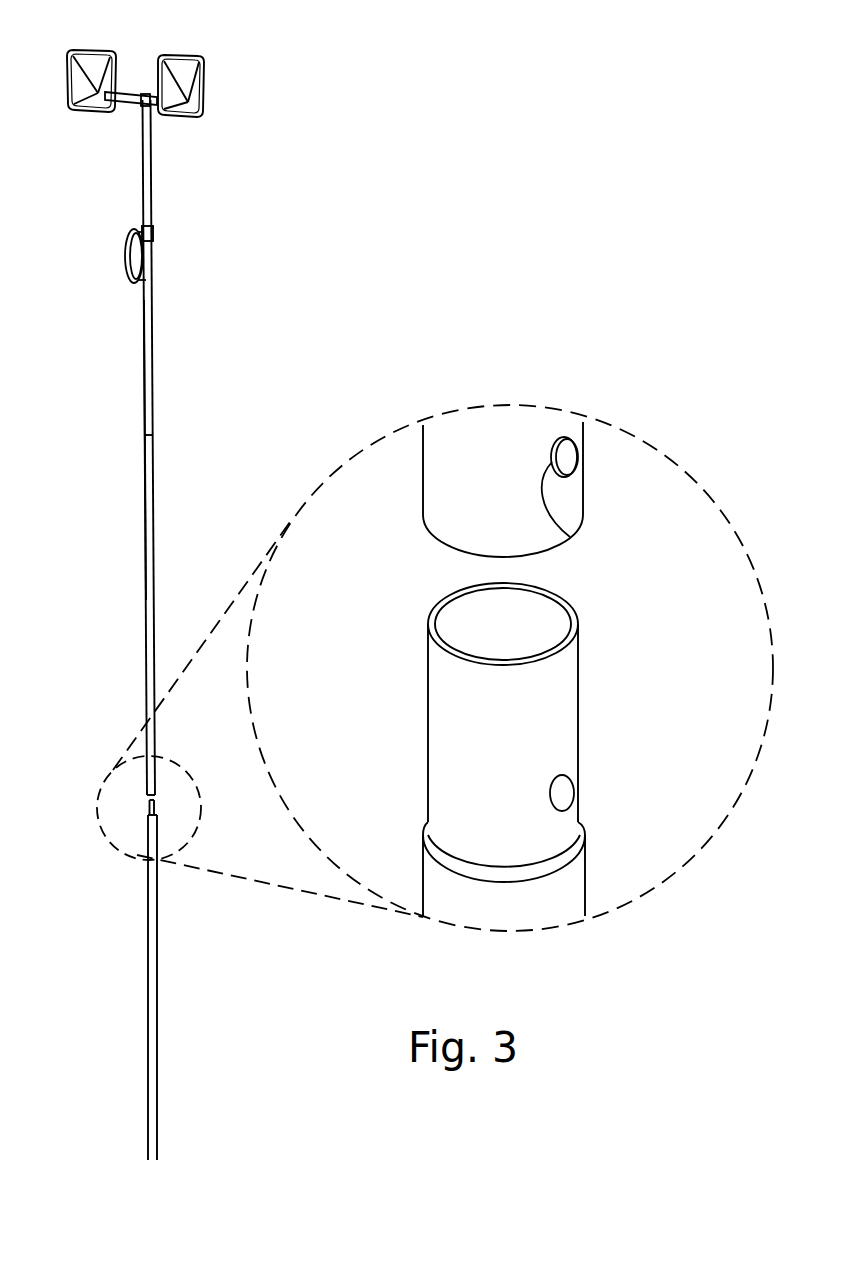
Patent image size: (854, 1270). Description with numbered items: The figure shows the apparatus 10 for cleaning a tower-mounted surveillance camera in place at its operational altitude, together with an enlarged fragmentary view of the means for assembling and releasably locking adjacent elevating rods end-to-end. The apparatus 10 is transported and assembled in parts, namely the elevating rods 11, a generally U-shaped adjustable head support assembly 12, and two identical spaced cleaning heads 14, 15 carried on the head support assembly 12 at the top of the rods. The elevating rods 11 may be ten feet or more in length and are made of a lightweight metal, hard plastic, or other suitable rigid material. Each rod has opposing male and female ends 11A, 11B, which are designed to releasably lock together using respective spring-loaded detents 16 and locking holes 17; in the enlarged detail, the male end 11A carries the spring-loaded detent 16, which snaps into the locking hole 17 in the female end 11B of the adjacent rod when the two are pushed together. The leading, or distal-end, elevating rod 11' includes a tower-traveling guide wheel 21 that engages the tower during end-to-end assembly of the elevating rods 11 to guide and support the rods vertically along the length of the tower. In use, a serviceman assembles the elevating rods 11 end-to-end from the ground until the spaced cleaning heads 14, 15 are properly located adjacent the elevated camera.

The apparatus 10 is at (224, 101).
The elevating rods 11 is at (149, 630).
The leading elevating rod 11' is at (212, 450).
The male end 11A is at (568, 710).
The female end 11B is at (440, 508).
The head support assembly 12 is at (125, 103).
The cleaning head 14 is at (190, 57).
The cleaning head 15 is at (97, 50).
The spring-loaded detent 16 is at (563, 808).
The locking hole 17 is at (570, 537).
The tower-traveling guide wheel 21 is at (131, 262).